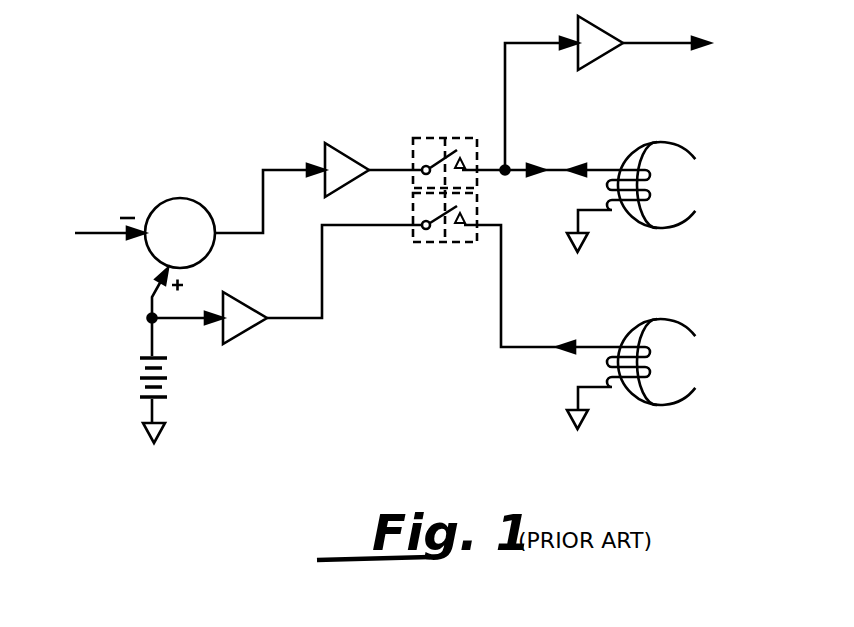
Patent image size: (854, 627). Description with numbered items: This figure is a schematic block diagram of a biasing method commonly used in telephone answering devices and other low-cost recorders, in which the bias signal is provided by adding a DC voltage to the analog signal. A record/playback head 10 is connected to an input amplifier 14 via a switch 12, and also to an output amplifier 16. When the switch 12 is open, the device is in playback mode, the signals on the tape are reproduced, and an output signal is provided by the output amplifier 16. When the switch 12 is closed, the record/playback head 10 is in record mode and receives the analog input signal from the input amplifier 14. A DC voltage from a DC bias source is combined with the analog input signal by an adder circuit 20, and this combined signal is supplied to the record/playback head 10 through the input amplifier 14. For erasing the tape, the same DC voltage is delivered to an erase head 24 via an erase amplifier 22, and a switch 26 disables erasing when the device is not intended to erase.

The record/playback head 10 is at (695, 160).
The switch 12 is at (445, 138).
The input amplifier 14 is at (343, 150).
The output amplifier 16 is at (600, 26).
The adder circuit 20 is at (178, 197).
The erase amplifier 22 is at (241, 300).
The erase head 24 is at (695, 337).
The switch 26 is at (445, 242).